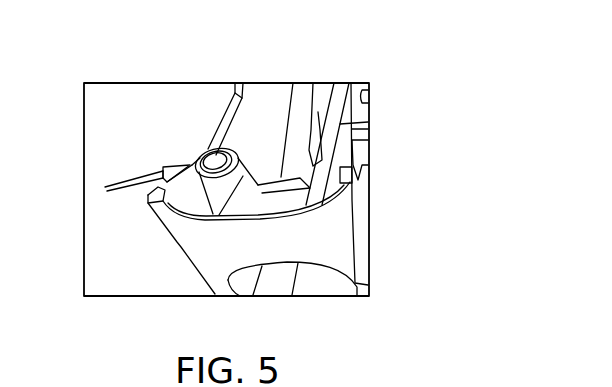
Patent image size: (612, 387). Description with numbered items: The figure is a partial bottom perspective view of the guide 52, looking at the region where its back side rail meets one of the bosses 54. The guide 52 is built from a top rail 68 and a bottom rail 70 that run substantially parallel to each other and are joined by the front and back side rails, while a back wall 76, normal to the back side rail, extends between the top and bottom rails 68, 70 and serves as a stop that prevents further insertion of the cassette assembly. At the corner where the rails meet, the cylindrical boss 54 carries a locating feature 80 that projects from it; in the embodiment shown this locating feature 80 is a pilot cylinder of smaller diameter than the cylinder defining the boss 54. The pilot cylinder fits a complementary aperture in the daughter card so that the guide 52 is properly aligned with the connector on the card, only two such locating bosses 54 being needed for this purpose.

The guide 52 is at (428, 197).
The boss 54 is at (240, 151).
The top rail 68 is at (225, 111).
The bottom rail 70 is at (346, 123).
The back wall 76 is at (210, 250).
The locating feature 80 is at (131, 181).